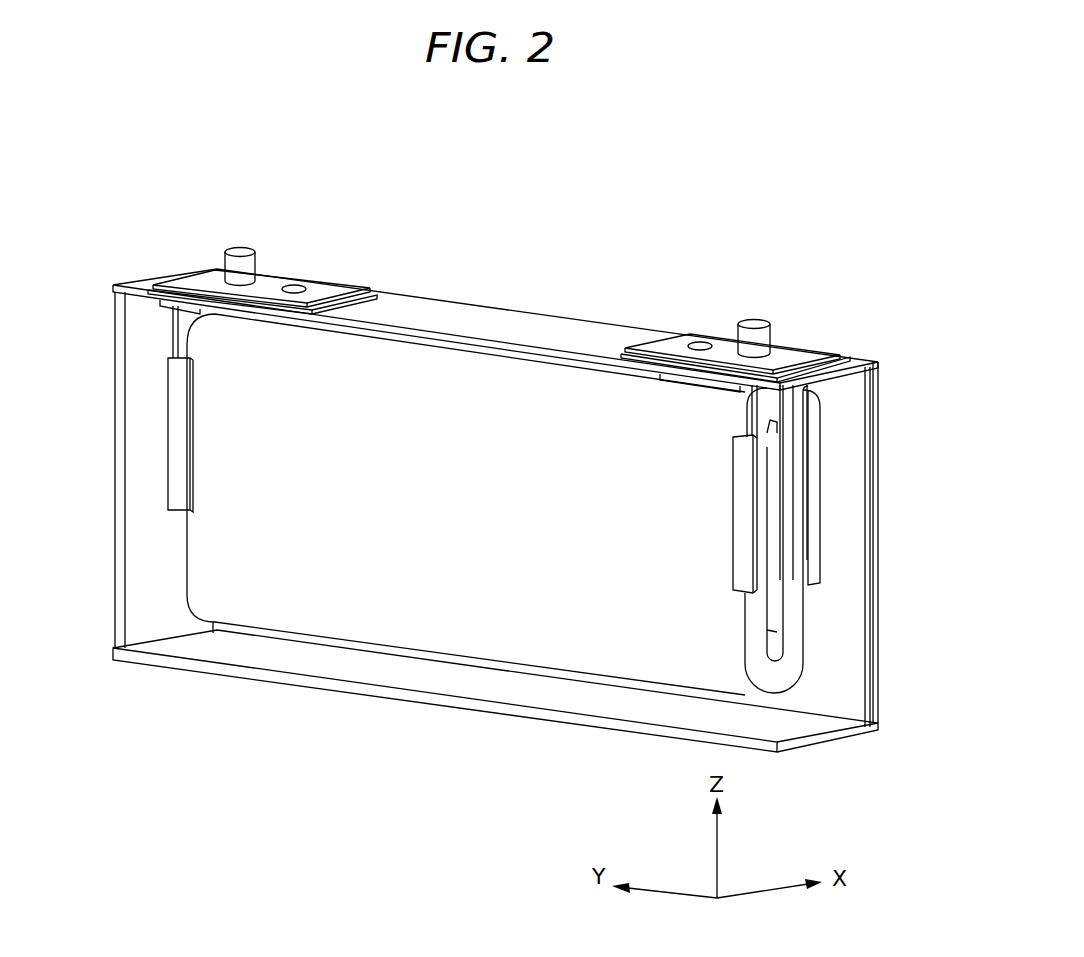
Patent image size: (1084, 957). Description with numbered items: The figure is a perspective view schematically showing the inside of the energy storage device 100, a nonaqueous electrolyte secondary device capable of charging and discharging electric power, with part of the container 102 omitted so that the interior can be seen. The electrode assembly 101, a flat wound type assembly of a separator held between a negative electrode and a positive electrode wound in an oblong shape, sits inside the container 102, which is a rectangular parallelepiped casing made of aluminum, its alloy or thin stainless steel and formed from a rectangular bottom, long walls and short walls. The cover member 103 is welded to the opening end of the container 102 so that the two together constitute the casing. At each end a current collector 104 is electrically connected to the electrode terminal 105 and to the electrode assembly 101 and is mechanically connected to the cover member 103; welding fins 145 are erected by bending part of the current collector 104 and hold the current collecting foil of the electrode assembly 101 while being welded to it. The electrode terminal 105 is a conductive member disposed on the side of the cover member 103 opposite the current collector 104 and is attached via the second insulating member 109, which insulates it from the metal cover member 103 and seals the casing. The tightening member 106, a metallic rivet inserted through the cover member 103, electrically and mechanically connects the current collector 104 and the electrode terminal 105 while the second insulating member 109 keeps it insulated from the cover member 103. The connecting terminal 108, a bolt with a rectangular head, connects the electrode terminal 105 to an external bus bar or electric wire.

The energy storage device 100 is at (776, 200).
The electrode assembly 101 is at (500, 574).
The container 102 is at (272, 683).
The cover member 103 is at (478, 321).
The current collector 104 is at (822, 520).
The electrode terminal 105 is at (332, 287).
The tightening member 106 is at (294, 284).
The connecting terminal 108 is at (243, 247).
The second insulating member 109 is at (372, 289).
The welding fins 145 is at (194, 446).